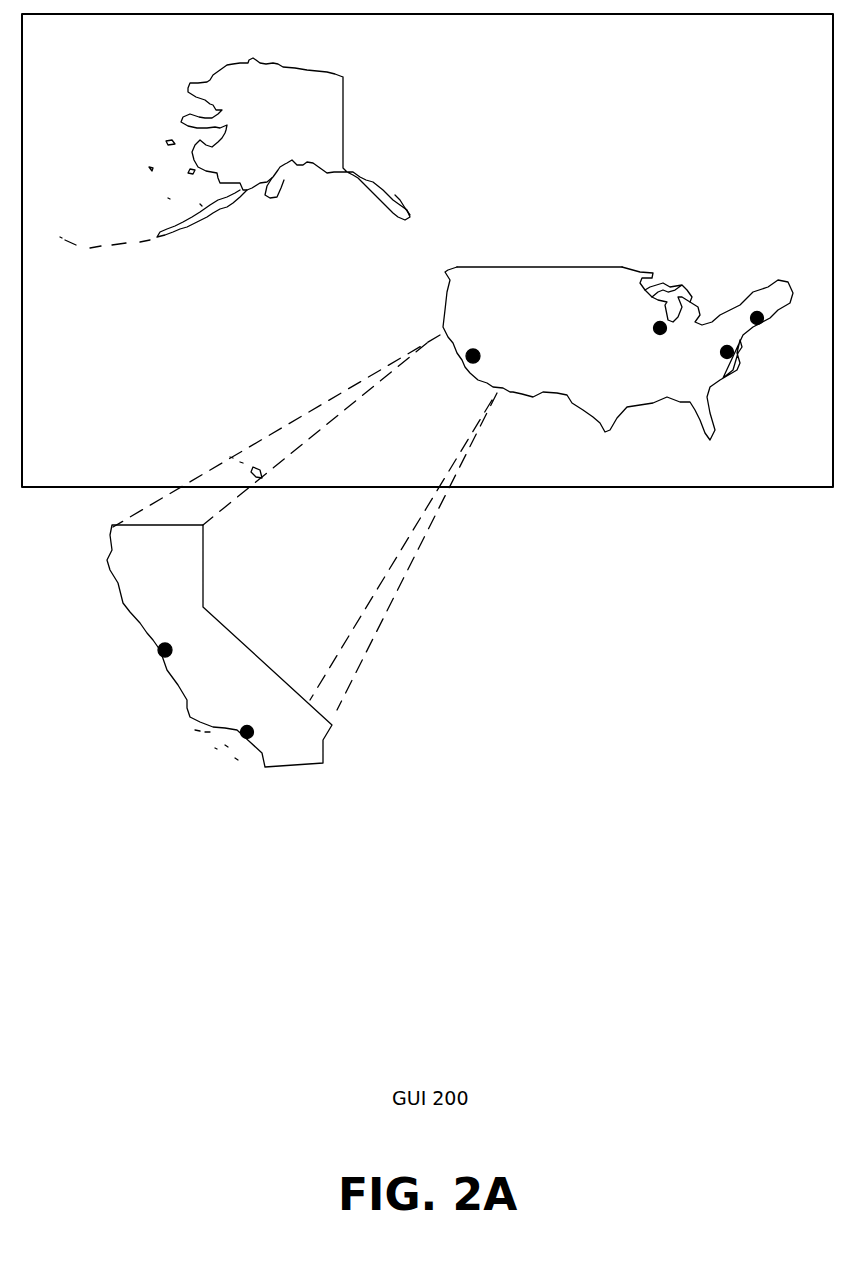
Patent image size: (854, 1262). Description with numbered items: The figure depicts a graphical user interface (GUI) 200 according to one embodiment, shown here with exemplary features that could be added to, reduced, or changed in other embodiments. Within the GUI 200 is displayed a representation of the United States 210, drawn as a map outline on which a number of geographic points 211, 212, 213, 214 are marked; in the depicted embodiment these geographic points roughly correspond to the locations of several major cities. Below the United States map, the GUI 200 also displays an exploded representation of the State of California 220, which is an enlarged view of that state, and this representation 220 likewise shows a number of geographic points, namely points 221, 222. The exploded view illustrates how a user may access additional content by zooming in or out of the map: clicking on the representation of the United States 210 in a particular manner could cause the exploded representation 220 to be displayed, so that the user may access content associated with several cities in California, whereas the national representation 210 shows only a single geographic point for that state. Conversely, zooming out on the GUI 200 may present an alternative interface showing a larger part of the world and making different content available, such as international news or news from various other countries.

The graphical user interface 200 is at (812, 46).
The representation of the United States 210 is at (531, 258).
The geographic point 211 is at (471, 338).
The geographic point 212 is at (651, 340).
The geographic point 213 is at (711, 352).
The geographic point 214 is at (757, 300).
The exploded representation of the State of California 220 is at (296, 778).
The geographic point 221 is at (172, 632).
The geographic point 222 is at (255, 714).